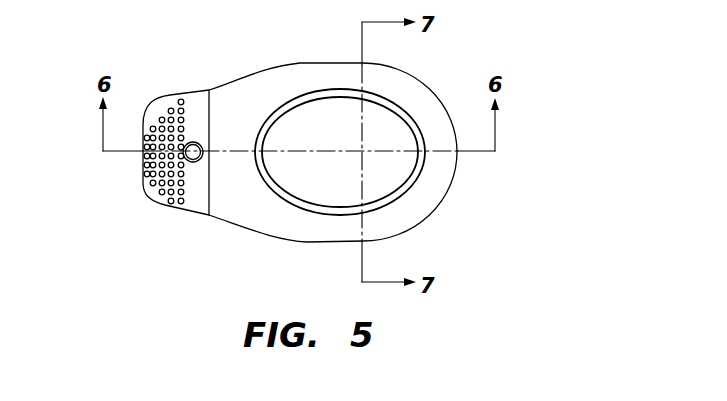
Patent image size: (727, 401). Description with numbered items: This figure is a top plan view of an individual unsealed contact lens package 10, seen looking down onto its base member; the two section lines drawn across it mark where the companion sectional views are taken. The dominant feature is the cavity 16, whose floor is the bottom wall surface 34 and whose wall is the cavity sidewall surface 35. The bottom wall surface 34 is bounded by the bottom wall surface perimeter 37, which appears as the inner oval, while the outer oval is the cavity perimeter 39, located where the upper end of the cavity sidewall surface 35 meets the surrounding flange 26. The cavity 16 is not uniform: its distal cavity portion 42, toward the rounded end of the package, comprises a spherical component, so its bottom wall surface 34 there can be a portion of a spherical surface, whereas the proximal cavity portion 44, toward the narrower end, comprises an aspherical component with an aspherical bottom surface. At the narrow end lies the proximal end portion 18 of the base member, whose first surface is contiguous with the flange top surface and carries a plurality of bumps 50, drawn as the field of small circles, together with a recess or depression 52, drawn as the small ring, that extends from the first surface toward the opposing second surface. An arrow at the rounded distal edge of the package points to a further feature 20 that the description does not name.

The contact lens package 10 is at (158, 47).
The cavity 16 is at (378, 117).
The proximal end portion 18 is at (186, 222).
The housing rim 20 is at (466, 159).
The flange 26 is at (427, 187).
The bottom wall surface 34 is at (318, 118).
The cavity sidewall surface 35 is at (380, 210).
The bottom wall surface perimeter 37 is at (338, 98).
The cavity perimeter 39 is at (408, 105).
The distal cavity portion 42 is at (400, 142).
The proximal cavity portion 44 is at (283, 163).
The bumps 50 is at (147, 182).
The recess 52 is at (195, 142).